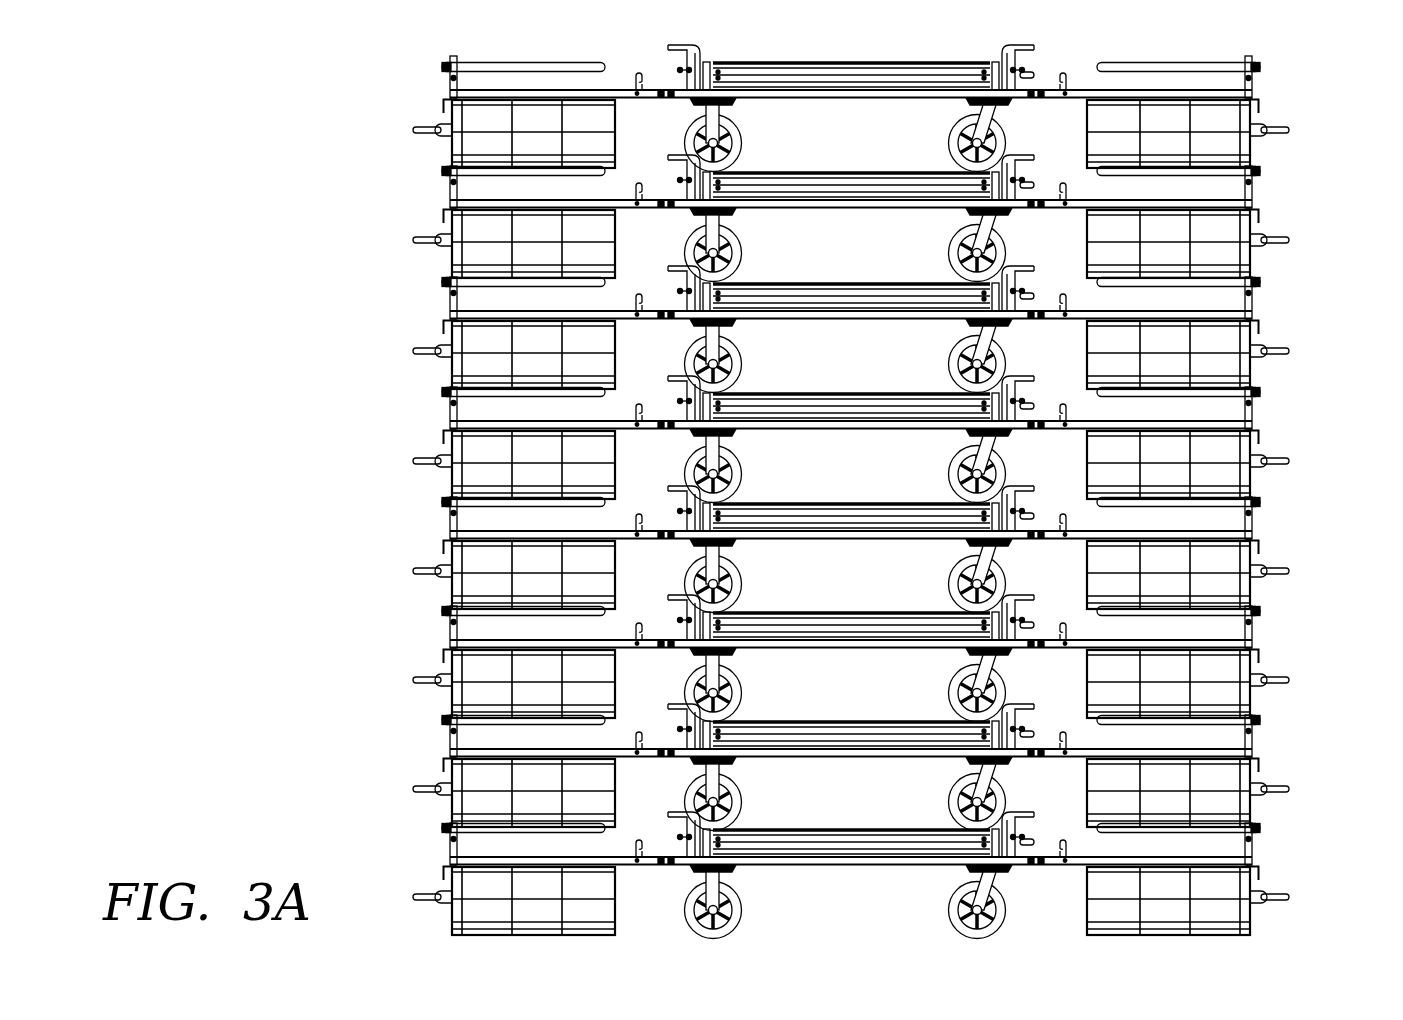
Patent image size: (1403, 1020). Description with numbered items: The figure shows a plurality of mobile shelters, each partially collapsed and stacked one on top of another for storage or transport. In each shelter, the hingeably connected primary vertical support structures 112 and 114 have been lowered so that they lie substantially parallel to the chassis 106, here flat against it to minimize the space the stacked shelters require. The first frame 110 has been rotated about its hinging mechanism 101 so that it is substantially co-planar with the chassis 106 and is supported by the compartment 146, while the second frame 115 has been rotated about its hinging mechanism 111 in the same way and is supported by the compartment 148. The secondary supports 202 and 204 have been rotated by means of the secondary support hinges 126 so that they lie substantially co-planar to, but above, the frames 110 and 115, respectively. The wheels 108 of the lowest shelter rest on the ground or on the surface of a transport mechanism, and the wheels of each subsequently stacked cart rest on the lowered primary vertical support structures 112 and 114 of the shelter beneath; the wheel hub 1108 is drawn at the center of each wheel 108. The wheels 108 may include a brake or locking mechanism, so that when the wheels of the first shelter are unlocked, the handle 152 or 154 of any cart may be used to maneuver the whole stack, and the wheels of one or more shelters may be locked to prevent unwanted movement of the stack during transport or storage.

The hinging mechanism 101 is at (664, 862).
The chassis 106 is at (906, 868).
The wheels 108 is at (715, 932).
The caster wheel hub 1108 is at (712, 906).
The first frame 110 is at (535, 858).
The hinging mechanism 111 is at (1031, 866).
The primary vertical support structure 112 is at (763, 838).
The primary vertical support structure 114 is at (821, 845).
The second frame 115 is at (1157, 860).
The secondary support hinges 126 is at (1248, 847).
The compartment 146 is at (458, 918).
The compartment 148 is at (1243, 918).
The handle 152 is at (415, 897).
The handle 154 is at (1285, 897).
The secondary support 202 is at (493, 830).
The secondary support 204 is at (1213, 829).